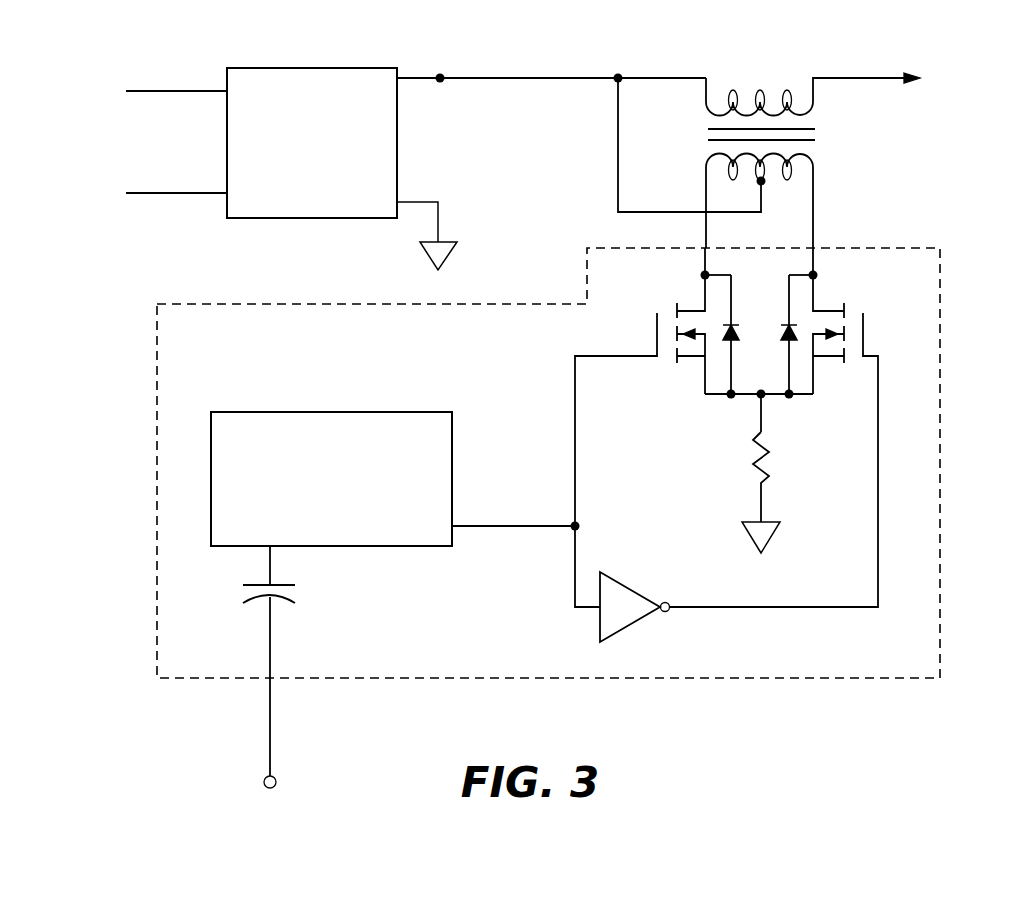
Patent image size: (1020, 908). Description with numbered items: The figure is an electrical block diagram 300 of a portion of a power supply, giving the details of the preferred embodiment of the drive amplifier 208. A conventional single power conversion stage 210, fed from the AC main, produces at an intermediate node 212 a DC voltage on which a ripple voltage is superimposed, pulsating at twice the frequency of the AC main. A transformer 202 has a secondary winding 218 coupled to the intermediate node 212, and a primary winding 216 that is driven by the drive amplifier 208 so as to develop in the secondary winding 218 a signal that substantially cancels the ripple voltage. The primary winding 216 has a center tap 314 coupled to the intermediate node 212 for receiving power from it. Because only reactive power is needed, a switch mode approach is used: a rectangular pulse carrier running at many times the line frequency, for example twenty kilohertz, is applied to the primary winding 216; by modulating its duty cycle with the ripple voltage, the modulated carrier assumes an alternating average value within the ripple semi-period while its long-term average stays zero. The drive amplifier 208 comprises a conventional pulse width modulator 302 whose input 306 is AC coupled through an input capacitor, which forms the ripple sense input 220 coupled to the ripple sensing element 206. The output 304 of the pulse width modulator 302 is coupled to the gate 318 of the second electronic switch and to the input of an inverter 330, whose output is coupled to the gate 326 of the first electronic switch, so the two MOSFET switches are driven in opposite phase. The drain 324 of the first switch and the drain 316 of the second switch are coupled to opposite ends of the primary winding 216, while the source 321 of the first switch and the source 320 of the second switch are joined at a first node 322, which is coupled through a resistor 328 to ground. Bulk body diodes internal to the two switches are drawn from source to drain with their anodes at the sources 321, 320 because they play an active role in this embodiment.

The electrical block diagram 300 is at (514, 849).
The single power conversion stage 210 is at (345, 68).
The intermediate node 212 is at (438, 73).
The secondary winding 218 is at (760, 97).
The transformer 202 is at (815, 134).
The primary winding 216 is at (706, 168).
The center tap 314 is at (765, 183).
The drive amplifier 208 is at (322, 304).
The pulse width modulator 302 is at (420, 412).
The output 304 is at (455, 525).
The input 306 is at (270, 550).
The drain 316 is at (690, 310).
The gate 318 is at (652, 357).
The source 320 is at (698, 357).
The source 321 is at (817, 357).
The first node 322 is at (764, 396).
The drain 324 is at (827, 310).
The gate 326 is at (878, 345).
The resistor 328 is at (767, 463).
The inverter 330 is at (628, 585).
The ripple sense input 220 is at (271, 680).
The ripple sensing element 206 is at (272, 773).